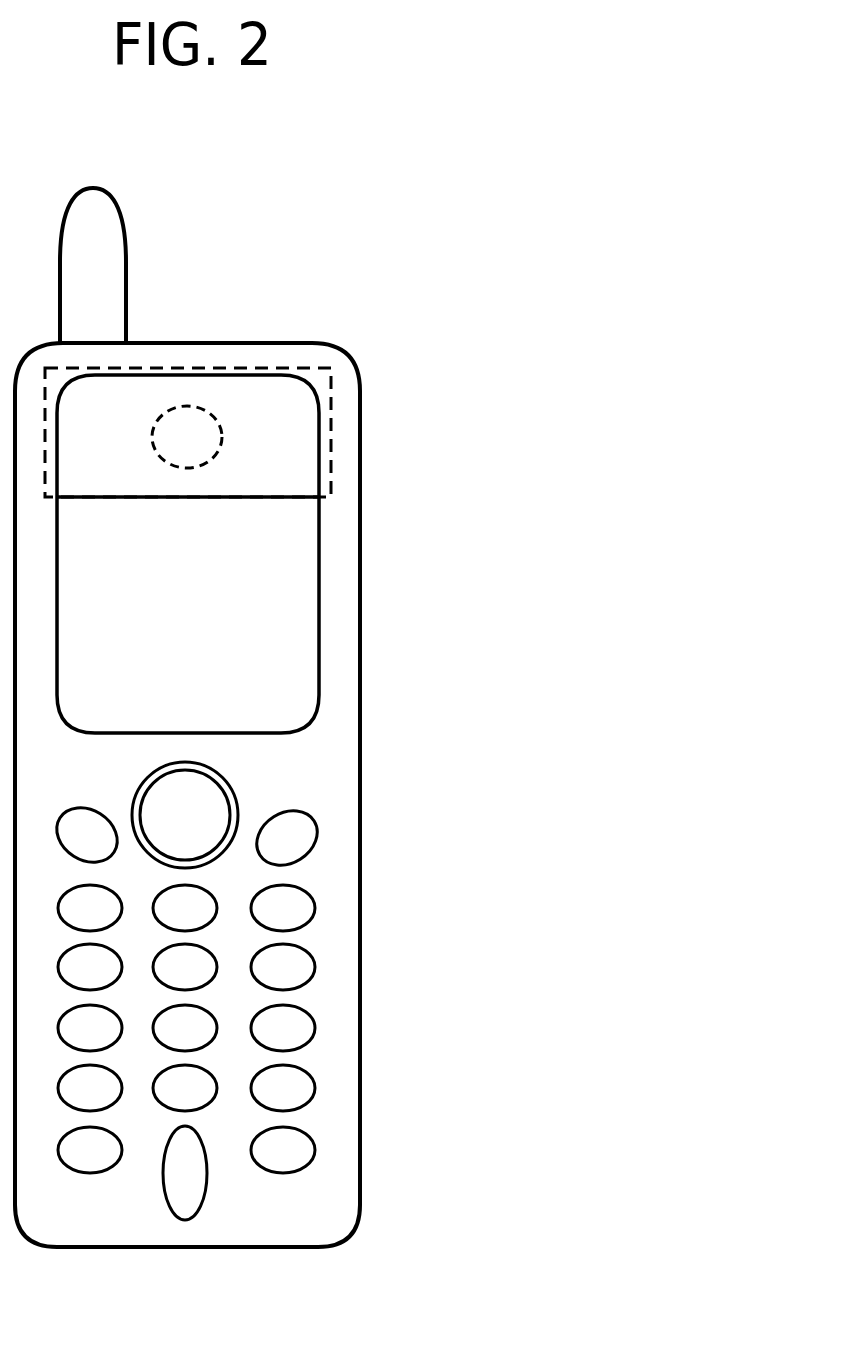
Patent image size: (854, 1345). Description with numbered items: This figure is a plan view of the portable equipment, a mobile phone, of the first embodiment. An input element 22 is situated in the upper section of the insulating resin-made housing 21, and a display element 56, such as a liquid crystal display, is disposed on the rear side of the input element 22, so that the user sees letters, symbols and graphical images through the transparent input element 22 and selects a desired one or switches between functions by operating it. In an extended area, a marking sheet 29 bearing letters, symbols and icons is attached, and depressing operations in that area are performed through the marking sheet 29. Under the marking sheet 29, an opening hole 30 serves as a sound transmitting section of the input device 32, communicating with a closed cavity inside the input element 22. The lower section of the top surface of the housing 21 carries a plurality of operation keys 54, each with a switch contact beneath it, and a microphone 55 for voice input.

The housing 21 is at (347, 362).
The input element 22 is at (193, 623).
The marking sheet 29 is at (310, 366).
The opening hole 30 is at (200, 435).
The input device 32 is at (333, 554).
The operation keys 54 is at (317, 1018).
The microphone 55 is at (207, 1177).
The display element 56 is at (264, 565).